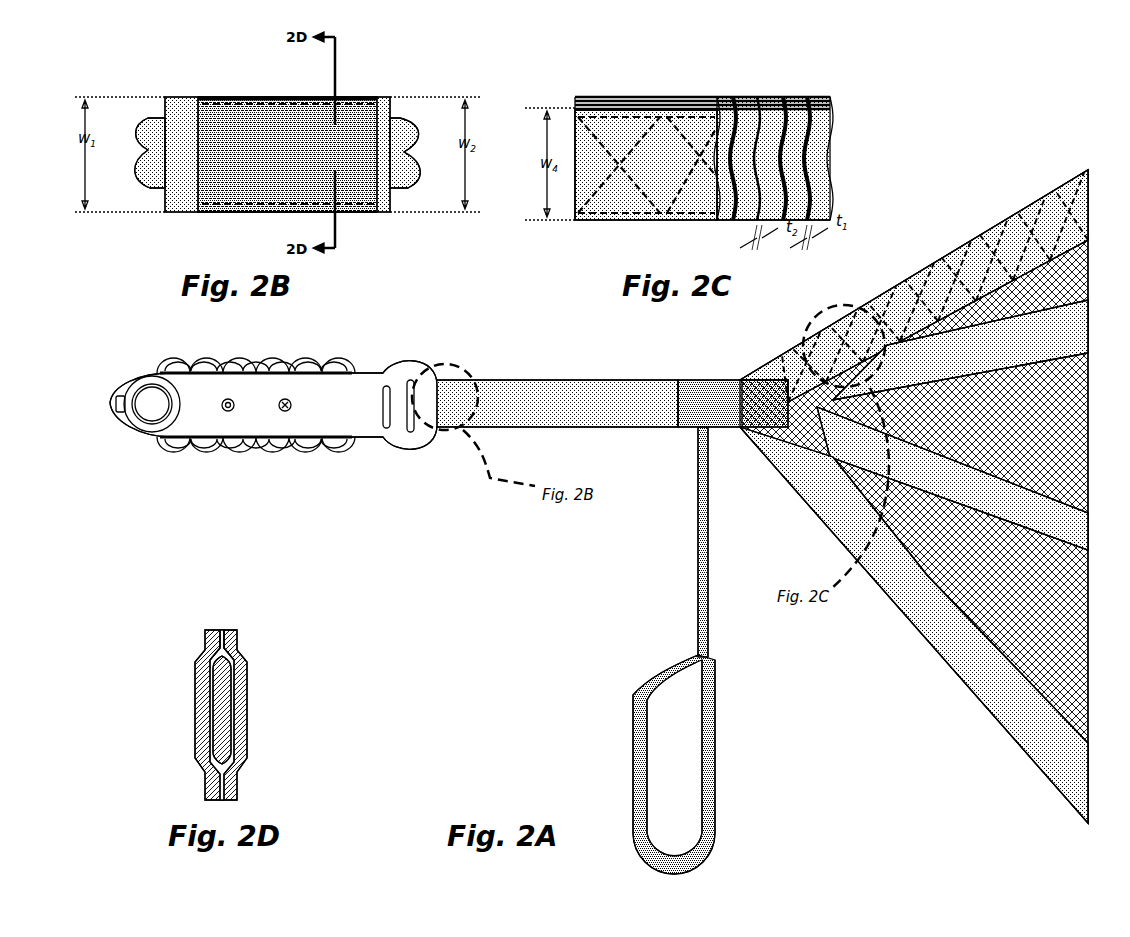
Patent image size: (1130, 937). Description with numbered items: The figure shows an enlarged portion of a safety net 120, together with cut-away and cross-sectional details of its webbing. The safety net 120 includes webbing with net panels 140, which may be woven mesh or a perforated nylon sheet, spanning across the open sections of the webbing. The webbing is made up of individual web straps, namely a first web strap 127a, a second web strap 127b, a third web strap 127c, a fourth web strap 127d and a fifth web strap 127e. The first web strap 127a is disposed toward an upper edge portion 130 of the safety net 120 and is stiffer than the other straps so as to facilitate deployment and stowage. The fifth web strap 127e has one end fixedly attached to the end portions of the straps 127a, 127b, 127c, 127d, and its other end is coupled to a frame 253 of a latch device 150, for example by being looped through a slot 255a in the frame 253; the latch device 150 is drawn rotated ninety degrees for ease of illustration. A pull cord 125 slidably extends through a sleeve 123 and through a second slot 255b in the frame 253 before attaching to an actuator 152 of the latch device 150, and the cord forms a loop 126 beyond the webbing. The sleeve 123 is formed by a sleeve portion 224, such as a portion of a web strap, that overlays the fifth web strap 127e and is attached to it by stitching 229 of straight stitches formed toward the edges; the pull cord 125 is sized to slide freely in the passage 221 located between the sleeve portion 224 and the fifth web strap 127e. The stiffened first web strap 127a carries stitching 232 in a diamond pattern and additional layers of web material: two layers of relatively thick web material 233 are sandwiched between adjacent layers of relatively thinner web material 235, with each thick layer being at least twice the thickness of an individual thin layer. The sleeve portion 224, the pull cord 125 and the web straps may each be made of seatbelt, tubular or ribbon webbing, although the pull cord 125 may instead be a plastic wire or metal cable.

In FIG. 2A, the safety net 120 is at (960, 677).
In FIG. 2B, the sleeve 123 is at (193, 77).
In FIG. 2A, the sleeve 123 is at (587, 605).
In FIG. 2B, the pull cord 125 is at (405, 138).
In FIG. 2D, the pull cord 125 is at (225, 715).
In FIG. 2A, the pull cord 125 is at (430, 408).
In FIG. 2A, the loop 126 is at (640, 752).
In FIG. 2C, the first web strap 127a is at (667, 152).
In FIG. 2A, the first web strap 127a is at (950, 273).
In FIG. 2A, the second web strap 127b is at (832, 407).
In FIG. 2A, the third web strap 127c is at (978, 497).
In FIG. 2A, the fourth web strap 127d is at (933, 632).
In FIG. 2B, the fifth web strap 127e is at (190, 205).
In FIG. 2D, the fifth web strap 127e is at (240, 680).
In FIG. 2A, the fifth web strap 127e is at (697, 392).
In FIG. 2A, the upper edge portion 130 is at (997, 222).
In FIG. 2A, the net panel 140 is at (1068, 273).
In FIG. 2A, the latch device 150 is at (254, 484).
In FIG. 2A, the actuator 152 is at (215, 447).
In FIG. 2D, the passage 221 is at (223, 650).
In FIG. 2B, the sleeve portion 224 is at (360, 125).
In FIG. 2D, the sleeve portion 224 is at (200, 740).
In FIG. 2B, the stitching 229 is at (280, 100).
In FIG. 2C, the stitching 232 is at (645, 97).
In FIG. 2A, the stitching 232 is at (895, 307).
In FIG. 2C, the web layers 233 is at (797, 97).
In FIG. 2C, the web layers 235 is at (768, 123).
In FIG. 2A, the frame 253 is at (337, 425).
In FIG. 2A, the slot 255a is at (410, 432).
In FIG. 2A, the second slot 255b is at (388, 428).